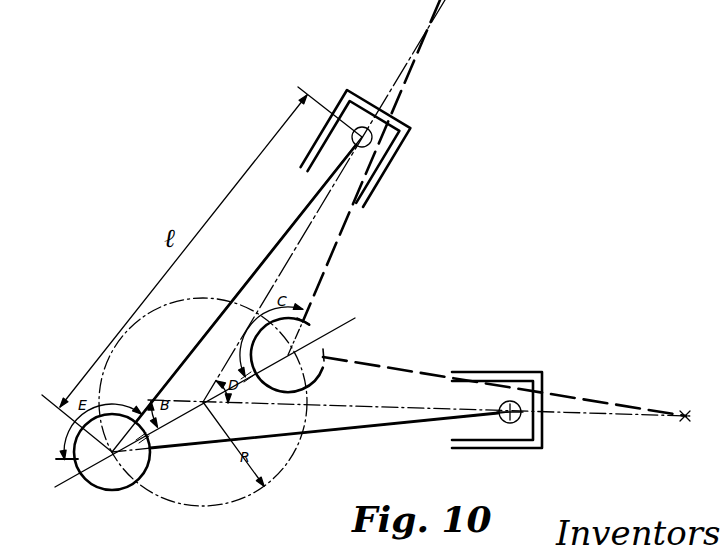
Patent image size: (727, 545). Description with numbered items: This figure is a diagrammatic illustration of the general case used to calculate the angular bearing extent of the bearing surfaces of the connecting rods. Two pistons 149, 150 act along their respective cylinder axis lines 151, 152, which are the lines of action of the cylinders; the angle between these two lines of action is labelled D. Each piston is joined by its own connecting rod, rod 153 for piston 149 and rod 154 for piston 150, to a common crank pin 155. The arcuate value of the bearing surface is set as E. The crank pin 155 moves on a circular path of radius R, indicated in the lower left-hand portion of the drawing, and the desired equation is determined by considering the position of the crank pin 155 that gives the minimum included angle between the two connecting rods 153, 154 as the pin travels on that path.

The piston 149 is at (400, 146).
The piston 150 is at (520, 372).
The cylinder axis line 151 is at (404, 64).
The cylinder axis line 152 is at (612, 417).
The connecting rod 153 is at (275, 248).
The connecting rod 154 is at (332, 429).
The crank pin 155 is at (107, 479).